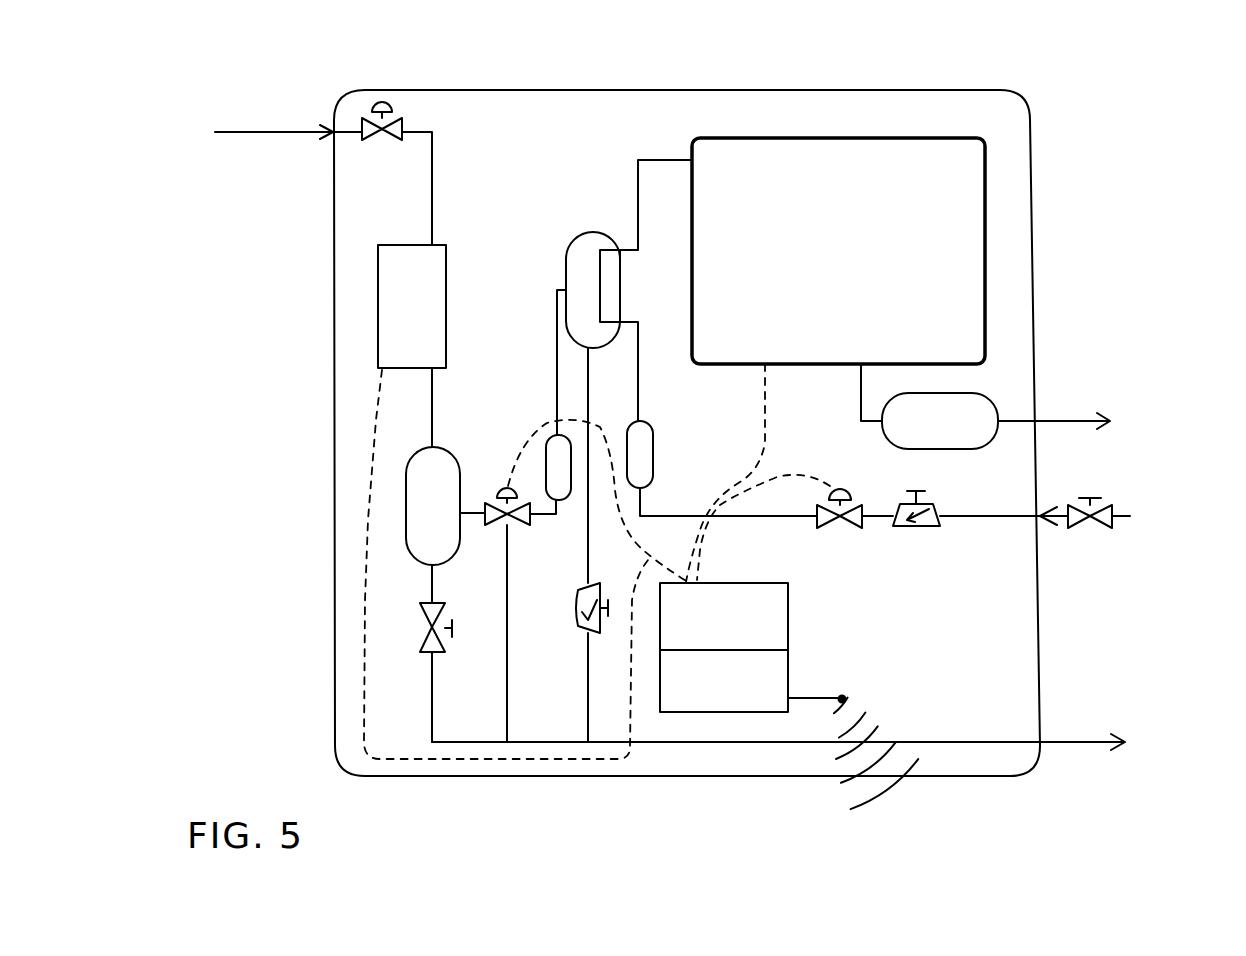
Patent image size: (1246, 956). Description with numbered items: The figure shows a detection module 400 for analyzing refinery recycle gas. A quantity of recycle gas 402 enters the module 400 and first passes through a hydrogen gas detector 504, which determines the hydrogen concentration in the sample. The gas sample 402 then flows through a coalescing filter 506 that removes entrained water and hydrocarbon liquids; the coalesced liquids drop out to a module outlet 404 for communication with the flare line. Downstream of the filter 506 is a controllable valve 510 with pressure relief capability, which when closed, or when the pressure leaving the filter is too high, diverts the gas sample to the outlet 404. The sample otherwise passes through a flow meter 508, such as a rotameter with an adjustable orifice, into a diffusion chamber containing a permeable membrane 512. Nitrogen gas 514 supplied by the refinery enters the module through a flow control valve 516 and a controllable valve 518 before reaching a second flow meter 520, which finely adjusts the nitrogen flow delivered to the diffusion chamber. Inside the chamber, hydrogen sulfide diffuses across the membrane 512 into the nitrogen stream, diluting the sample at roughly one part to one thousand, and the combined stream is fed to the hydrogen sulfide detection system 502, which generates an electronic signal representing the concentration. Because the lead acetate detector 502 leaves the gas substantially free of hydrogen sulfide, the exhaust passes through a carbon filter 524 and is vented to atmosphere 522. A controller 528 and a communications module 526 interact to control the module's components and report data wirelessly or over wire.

The detection module 400 is at (312, 77).
The recycle gas sample 402 is at (281, 136).
The module outlet 404 is at (1063, 740).
The hydrogen sulfide detection system 502 is at (888, 160).
The hydrogen gas detector 504 is at (446, 330).
The coalescing filter 506 is at (448, 470).
The flow meter 508 is at (570, 487).
The controllable valve 510 is at (586, 232).
The permeable membrane 512 is at (606, 293).
The nitrogen gas 514 is at (1133, 518).
The flow control valve 516 is at (918, 528).
The controllable valve 518 is at (840, 530).
The flow meter 520 is at (654, 455).
The atmosphere vent 522 is at (1095, 409).
The carbon filter 524 is at (985, 395).
The communications module 526 is at (777, 686).
The controller 528 is at (719, 602).